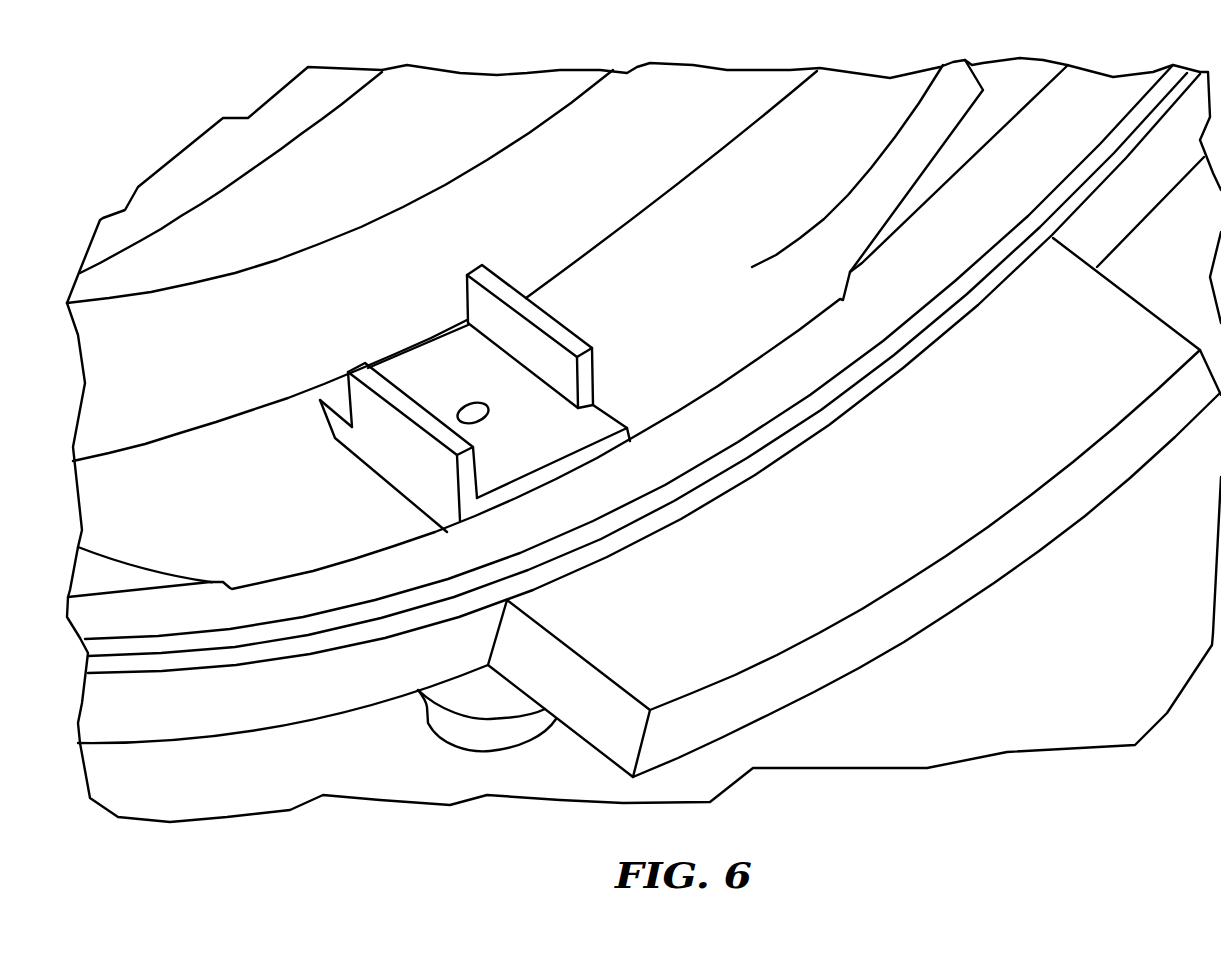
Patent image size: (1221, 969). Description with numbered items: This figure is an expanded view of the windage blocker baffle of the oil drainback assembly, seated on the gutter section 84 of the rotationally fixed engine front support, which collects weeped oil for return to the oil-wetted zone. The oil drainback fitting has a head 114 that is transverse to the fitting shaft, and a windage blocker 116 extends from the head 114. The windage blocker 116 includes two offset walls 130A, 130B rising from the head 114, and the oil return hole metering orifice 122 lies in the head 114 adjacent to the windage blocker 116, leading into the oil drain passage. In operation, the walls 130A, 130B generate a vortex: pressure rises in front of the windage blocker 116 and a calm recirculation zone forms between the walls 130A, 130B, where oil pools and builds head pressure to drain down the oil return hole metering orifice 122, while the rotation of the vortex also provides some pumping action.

The gutter section 84 is at (190, 500).
The head 114 is at (557, 447).
The windage blocker 116 is at (482, 352).
The oil return hole metering orifice 122 is at (500, 403).
The wall 130A is at (425, 420).
The wall 130B is at (557, 333).